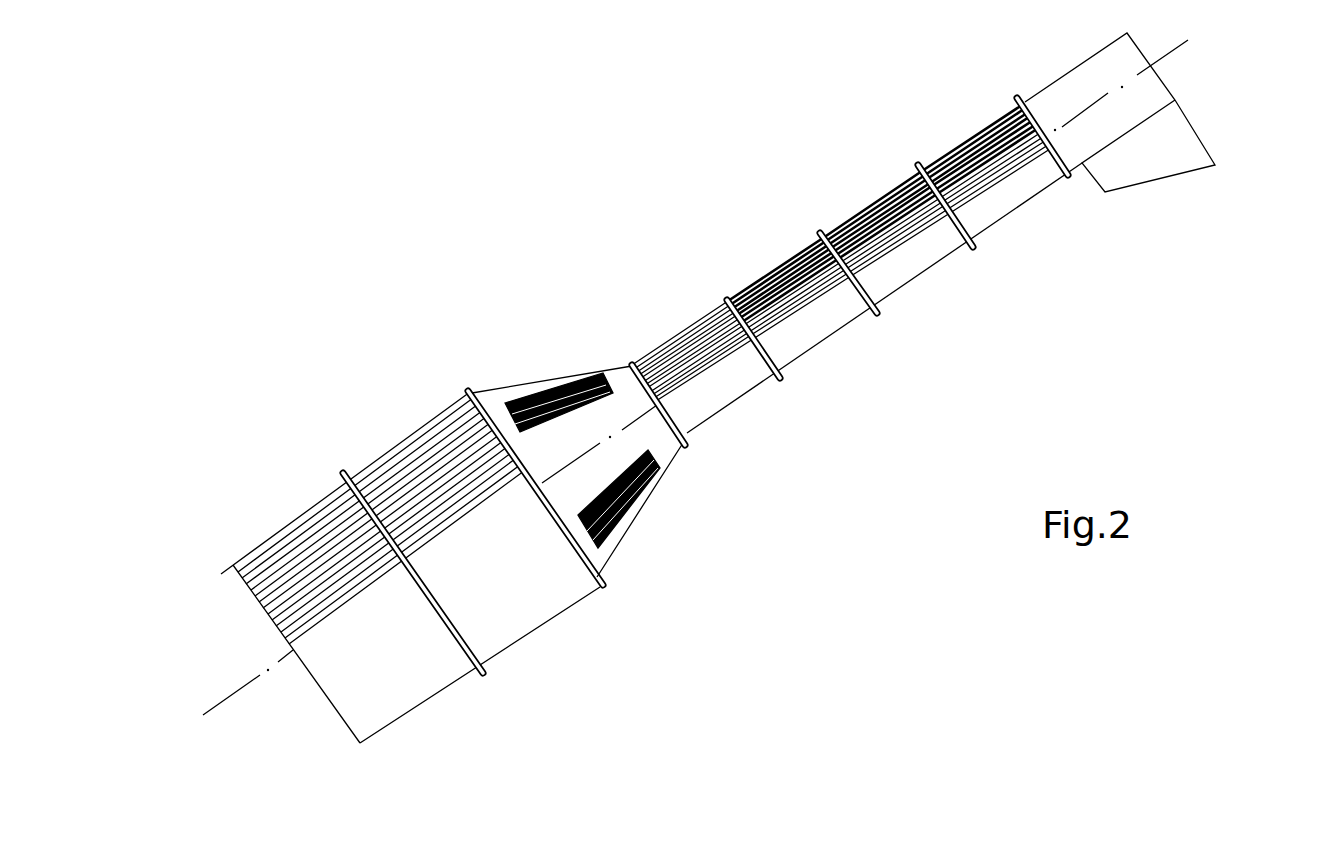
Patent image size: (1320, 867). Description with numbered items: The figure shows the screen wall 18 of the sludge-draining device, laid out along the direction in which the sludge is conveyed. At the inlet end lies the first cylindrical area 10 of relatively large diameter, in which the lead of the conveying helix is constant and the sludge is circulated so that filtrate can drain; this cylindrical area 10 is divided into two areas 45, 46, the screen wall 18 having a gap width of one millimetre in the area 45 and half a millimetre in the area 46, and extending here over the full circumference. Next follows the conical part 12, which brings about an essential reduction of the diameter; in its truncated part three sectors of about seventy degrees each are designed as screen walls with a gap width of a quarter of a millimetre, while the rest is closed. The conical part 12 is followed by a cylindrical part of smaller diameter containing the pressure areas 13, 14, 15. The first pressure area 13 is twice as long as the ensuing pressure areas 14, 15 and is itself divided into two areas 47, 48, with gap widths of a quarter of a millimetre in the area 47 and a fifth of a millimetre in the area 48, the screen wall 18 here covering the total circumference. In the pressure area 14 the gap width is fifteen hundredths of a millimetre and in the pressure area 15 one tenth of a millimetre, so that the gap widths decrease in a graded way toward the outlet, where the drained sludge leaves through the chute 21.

The first cylindrical area 10 is at (307, 435).
The conical part 12 is at (538, 347).
The first pressure area 13 is at (692, 297).
The pressure area 14 is at (847, 177).
The pressure area 15 is at (940, 148).
The screen wall 18 is at (260, 600).
The chute 21 is at (1182, 150).
The area 45 is at (377, 587).
The area 46 is at (487, 515).
The area 47 is at (708, 347).
The area 48 is at (805, 278).